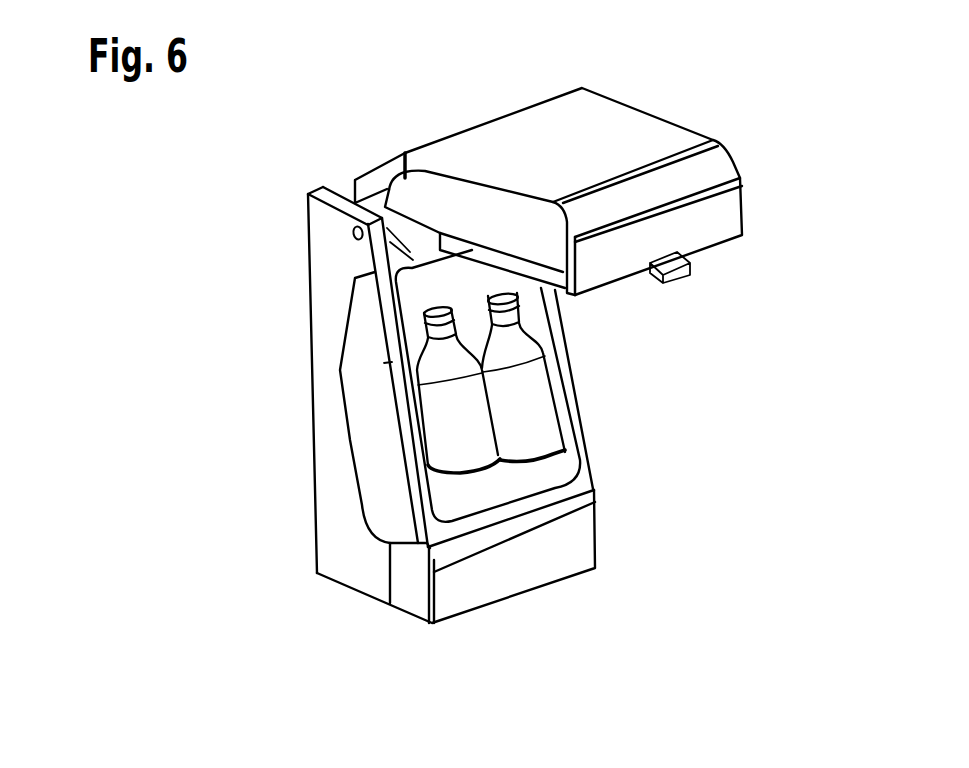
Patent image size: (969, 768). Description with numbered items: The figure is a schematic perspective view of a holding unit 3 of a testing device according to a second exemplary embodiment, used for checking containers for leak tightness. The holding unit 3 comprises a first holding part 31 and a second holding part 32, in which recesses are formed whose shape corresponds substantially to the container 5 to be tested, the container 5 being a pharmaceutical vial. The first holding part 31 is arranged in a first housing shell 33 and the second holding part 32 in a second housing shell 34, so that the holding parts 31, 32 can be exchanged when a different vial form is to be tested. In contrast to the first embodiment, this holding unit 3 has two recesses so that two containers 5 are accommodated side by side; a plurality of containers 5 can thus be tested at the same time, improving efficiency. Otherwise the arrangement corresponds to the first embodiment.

The holding unit 3 is at (755, 212).
The first housing shell 33 is at (467, 143).
The second holding part 32 is at (417, 203).
The second housing shell 34 is at (328, 418).
The first holding part 31 is at (380, 462).
The container 5 is at (541, 401).